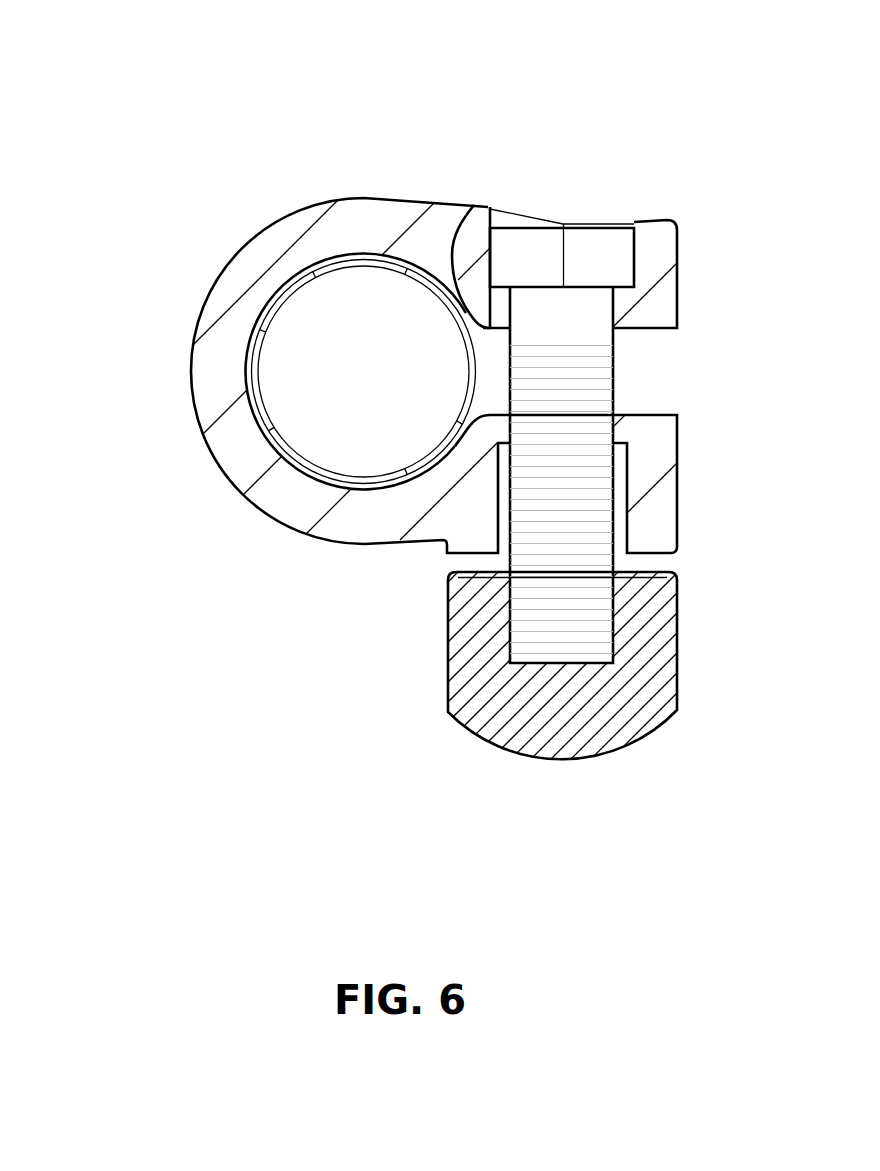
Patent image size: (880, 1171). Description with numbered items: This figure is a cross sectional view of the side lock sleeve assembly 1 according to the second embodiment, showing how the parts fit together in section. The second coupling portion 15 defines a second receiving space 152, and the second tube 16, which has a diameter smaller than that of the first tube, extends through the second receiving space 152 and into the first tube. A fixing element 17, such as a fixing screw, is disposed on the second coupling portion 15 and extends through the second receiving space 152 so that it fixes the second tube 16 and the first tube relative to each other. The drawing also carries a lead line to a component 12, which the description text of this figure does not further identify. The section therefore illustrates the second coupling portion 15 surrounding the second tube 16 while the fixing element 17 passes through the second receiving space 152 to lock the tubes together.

The bicycle handlebar stem assembly 1 is at (142, 92).
The clamp unit 12 is at (154, 283).
The second coupling portion 15 is at (270, 250).
The second receiving space 152 is at (462, 218).
The second tube 16 is at (369, 268).
The fixing element 17 is at (593, 263).